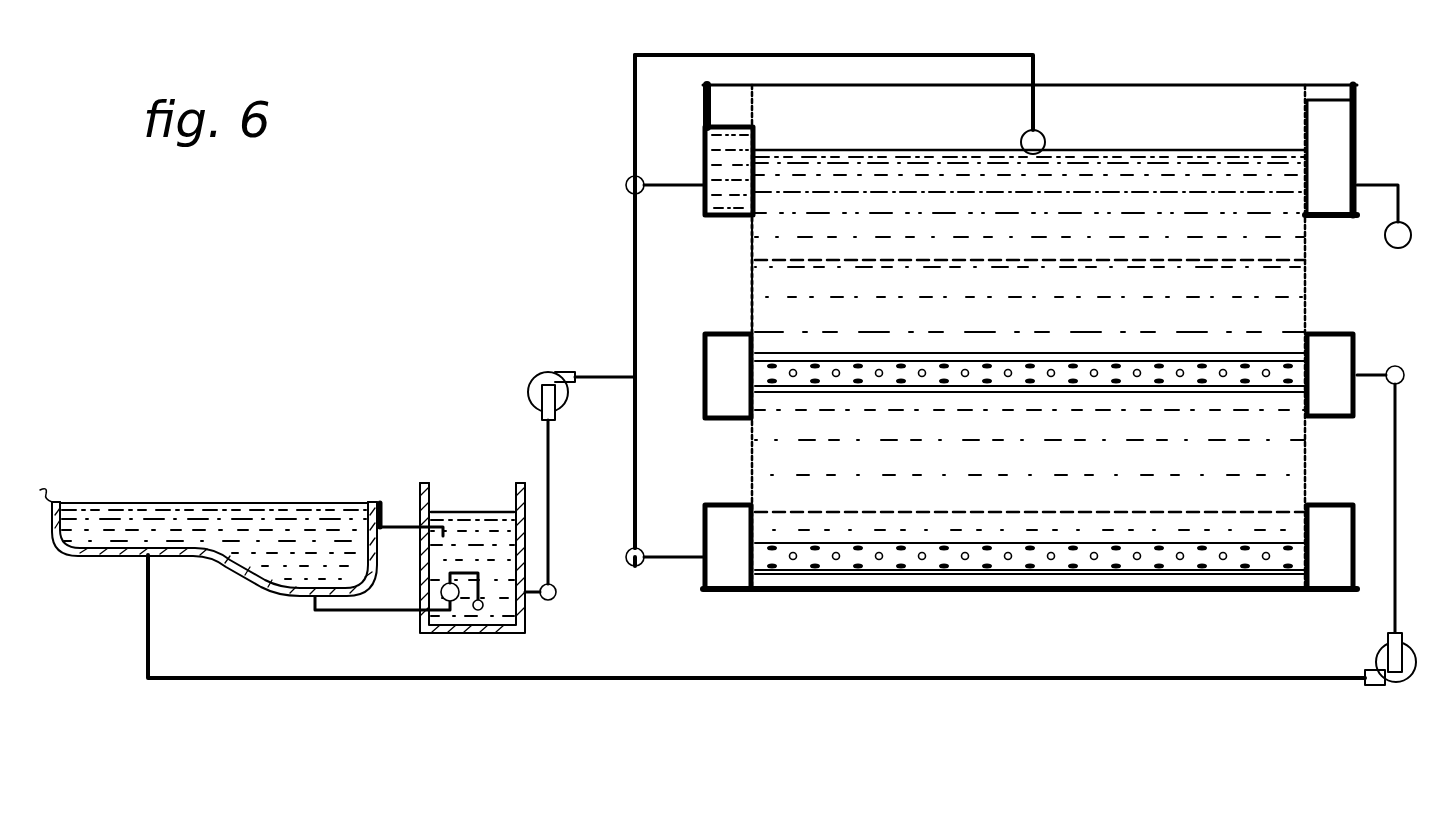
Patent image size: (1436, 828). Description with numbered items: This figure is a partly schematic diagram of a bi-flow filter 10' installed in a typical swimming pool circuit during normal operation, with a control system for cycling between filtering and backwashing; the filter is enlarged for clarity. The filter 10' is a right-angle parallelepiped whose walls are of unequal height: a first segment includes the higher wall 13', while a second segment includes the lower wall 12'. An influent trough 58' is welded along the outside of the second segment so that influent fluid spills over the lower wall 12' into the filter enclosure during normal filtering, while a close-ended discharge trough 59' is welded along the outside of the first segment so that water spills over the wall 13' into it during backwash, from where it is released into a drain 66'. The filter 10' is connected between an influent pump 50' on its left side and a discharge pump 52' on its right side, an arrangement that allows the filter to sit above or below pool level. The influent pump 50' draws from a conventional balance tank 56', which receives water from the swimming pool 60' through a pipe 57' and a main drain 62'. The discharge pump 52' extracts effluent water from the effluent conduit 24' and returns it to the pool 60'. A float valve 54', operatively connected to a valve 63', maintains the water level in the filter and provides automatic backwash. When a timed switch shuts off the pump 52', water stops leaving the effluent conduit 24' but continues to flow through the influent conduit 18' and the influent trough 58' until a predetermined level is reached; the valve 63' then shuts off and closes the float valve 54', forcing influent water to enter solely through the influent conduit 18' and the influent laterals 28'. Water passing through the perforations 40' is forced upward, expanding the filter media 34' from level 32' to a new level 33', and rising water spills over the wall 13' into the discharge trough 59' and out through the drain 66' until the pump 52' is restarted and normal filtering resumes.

The filter 10' is at (1030, 366).
The wall 12' is at (704, 209).
The wall 13' is at (1353, 132).
The influent conduit 18' is at (675, 569).
The effluent conduit 24' is at (1363, 475).
The influent laterals 28' is at (1021, 604).
The level 32' is at (1063, 269).
The level 33' is at (1030, 190).
The filter media 34' is at (1030, 470).
The perforations 40' is at (1030, 595).
The influent pump 50' is at (555, 457).
The discharge pump 52' is at (782, 620).
The float valve 54' is at (875, 101).
The balance tank 56' is at (472, 575).
The pipe 57' is at (411, 480).
The influent trough 58' is at (700, 154).
The discharge trough 59' is at (1359, 152).
The swimming pool 60' is at (208, 547).
The main drain 62' is at (374, 633).
The valve 63' is at (618, 310).
The drain 66' is at (1385, 244).